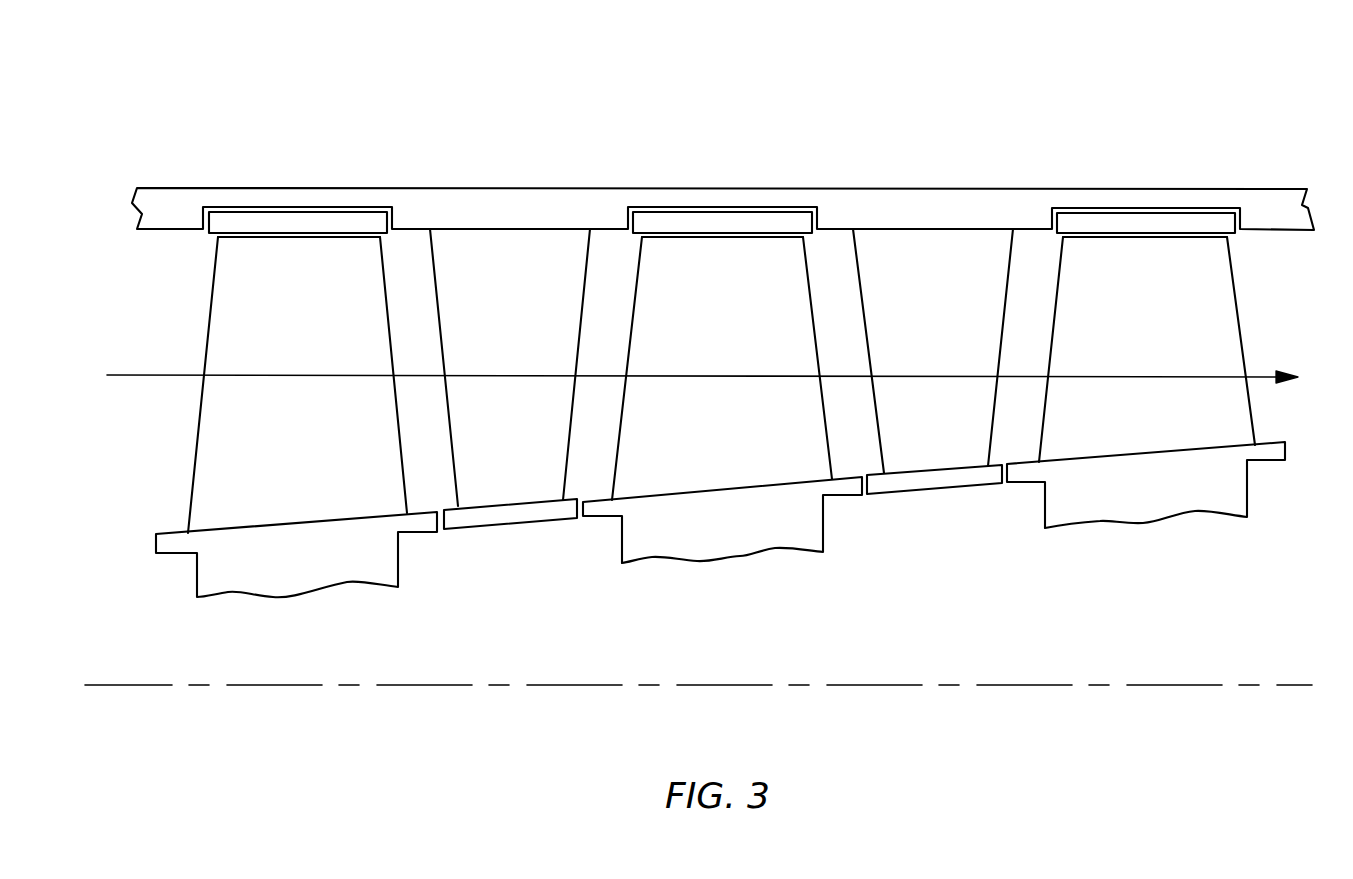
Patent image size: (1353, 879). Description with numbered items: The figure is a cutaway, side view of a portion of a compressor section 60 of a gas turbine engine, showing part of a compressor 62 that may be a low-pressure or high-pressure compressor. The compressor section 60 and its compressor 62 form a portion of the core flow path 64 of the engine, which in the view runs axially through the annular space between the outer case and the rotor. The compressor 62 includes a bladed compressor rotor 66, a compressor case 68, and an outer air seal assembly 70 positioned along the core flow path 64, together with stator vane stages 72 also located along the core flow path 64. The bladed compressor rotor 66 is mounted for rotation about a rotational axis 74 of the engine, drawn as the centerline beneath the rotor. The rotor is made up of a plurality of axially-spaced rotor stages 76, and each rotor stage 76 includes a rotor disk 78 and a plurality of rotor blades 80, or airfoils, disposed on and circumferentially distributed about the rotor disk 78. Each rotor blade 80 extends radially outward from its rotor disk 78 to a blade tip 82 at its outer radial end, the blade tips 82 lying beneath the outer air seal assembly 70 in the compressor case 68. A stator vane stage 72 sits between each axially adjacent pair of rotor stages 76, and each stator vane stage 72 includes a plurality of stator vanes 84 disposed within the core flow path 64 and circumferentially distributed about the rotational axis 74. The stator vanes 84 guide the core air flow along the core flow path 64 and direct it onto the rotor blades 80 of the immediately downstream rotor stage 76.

The compressor section 60 is at (1108, 82).
The compressor 62 is at (1244, 588).
The core flow path 64 is at (148, 375).
The bladed compressor rotor 66 is at (149, 654).
The compressor case 68 is at (547, 205).
The outer air seal assembly 70 is at (313, 220).
The stator vane stage 72 is at (515, 493).
The rotational axis 74 is at (1203, 686).
The rotor stage 76 is at (145, 519).
The rotor disk 78 is at (303, 572).
The rotor blade 80 is at (238, 308).
The blade tip 82 is at (265, 237).
The stator vane 84 is at (498, 253).